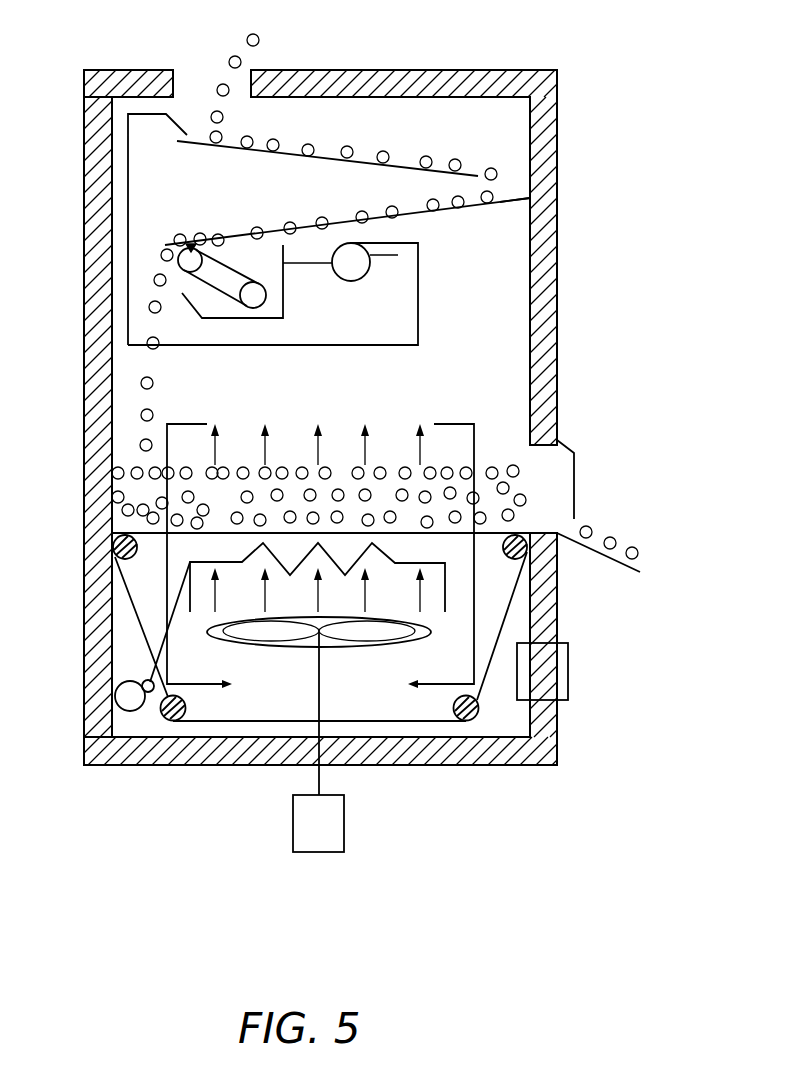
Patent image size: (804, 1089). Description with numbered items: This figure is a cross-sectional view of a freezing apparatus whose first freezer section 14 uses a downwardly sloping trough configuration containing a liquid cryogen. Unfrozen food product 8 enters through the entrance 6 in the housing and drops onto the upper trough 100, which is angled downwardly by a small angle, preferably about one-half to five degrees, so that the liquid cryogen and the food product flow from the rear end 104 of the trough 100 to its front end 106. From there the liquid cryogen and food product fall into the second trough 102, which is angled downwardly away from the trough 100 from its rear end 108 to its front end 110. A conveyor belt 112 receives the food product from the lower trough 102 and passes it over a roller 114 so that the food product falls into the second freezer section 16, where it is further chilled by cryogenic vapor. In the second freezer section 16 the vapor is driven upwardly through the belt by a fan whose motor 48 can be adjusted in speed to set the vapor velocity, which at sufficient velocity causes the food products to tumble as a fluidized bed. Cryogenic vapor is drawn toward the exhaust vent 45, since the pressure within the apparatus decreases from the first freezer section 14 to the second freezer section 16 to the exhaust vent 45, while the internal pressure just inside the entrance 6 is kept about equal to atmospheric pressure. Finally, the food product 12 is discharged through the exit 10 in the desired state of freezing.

The entrance 6 is at (209, 87).
The unfrozen food product 8 is at (258, 36).
The exit 10 is at (590, 490).
The food product 12 is at (514, 470).
The first freezer section 14 is at (530, 226).
The second freezer section 16 is at (483, 597).
The exhaust vent 45 is at (557, 685).
The motor 48 is at (334, 837).
The trough 100 is at (325, 152).
The second trough 102 is at (445, 210).
The rear end 104 is at (198, 149).
The front end 106 is at (473, 167).
The rear end 108 is at (516, 196).
The front end 110 is at (238, 235).
The conveyor belt 112 is at (225, 296).
The roller 114 is at (187, 243).